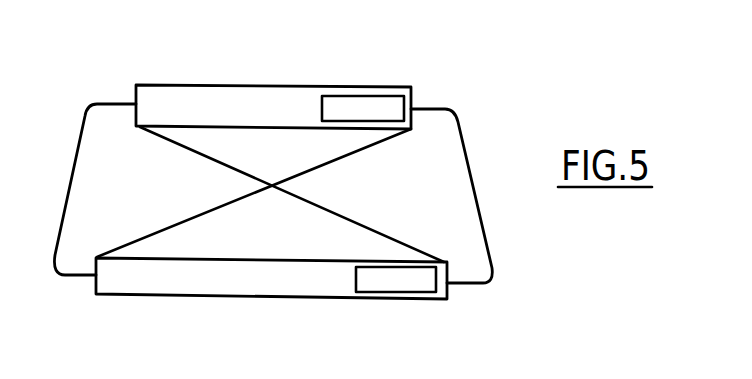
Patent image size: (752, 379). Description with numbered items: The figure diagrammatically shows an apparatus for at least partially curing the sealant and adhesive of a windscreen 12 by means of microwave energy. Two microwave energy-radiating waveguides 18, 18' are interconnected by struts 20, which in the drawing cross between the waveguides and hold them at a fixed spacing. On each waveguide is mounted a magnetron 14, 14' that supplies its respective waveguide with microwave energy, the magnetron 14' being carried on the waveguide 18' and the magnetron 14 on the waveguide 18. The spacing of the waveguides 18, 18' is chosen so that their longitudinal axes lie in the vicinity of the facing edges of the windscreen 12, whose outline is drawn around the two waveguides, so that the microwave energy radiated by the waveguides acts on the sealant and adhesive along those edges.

The windscreen 12 is at (473, 258).
The magnetron 14 is at (396, 321).
The magnetron 14' is at (363, 61).
The waveguide 18 is at (271, 315).
The waveguide 18' is at (273, 65).
The struts 20 is at (217, 157).